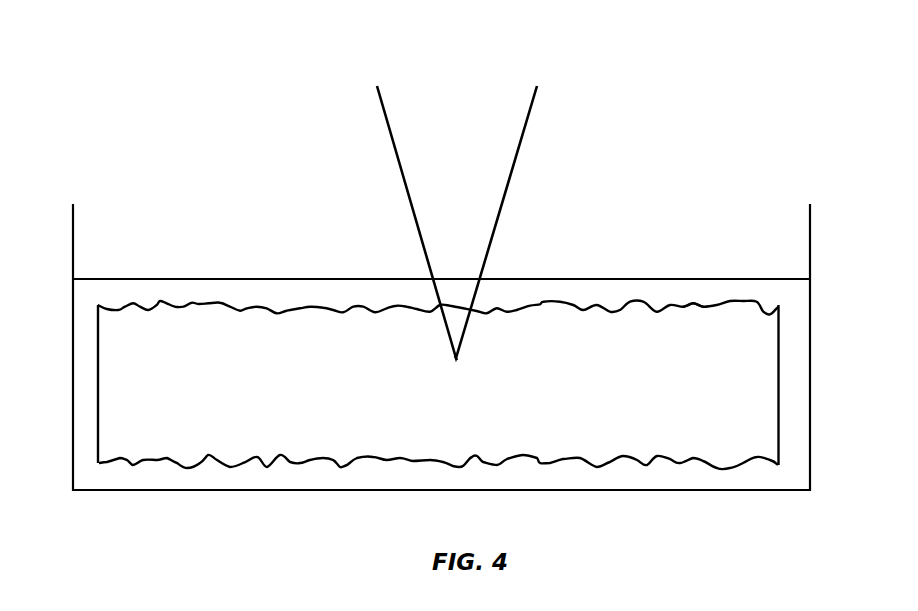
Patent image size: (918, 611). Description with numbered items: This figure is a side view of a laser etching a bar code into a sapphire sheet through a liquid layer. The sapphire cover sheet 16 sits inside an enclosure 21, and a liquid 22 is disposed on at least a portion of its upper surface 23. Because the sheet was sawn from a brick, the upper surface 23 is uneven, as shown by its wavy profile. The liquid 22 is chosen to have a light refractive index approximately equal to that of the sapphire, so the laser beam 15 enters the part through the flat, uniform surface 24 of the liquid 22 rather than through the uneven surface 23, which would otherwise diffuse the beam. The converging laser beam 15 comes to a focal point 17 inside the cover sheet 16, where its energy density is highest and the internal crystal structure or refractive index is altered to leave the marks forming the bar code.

The laser beam 15 is at (406, 188).
The cover sheet 16 is at (770, 362).
The focal point 17 is at (453, 360).
The enclosure 21 is at (812, 268).
The liquid 22 is at (800, 296).
The upper surface 23 is at (692, 305).
The uniform surface 24 is at (633, 279).